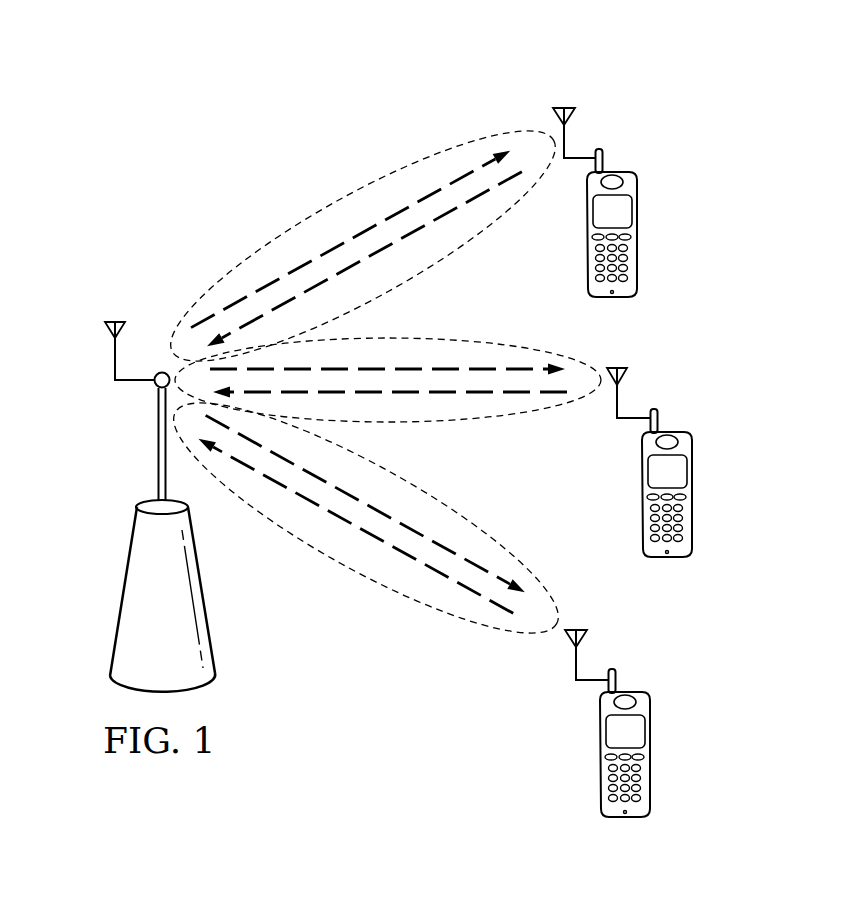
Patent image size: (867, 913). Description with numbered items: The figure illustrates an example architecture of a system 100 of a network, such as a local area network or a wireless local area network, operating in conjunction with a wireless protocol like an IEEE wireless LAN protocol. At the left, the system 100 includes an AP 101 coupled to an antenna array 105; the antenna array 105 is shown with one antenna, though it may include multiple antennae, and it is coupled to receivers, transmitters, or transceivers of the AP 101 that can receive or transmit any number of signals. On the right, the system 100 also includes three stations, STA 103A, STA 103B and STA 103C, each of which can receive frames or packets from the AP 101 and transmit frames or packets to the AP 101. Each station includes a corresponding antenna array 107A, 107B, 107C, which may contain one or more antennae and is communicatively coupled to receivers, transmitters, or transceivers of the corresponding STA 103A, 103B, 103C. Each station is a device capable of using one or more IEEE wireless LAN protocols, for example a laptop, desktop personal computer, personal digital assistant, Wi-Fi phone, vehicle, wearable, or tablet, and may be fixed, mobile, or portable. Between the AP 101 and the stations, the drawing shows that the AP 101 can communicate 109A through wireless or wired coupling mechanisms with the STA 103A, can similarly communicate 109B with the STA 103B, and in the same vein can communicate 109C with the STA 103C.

The system 100 is at (96, 69).
The AP 101 is at (120, 587).
The antenna array 105 is at (111, 319).
The antenna array 107A is at (572, 105).
The antenna array 107B is at (622, 365).
The antenna array 107C is at (580, 627).
The STA 103A is at (638, 237).
The STA 103B is at (692, 497).
The STA 103C is at (650, 757).
The communication 109A is at (343, 208).
The communication 109B is at (424, 338).
The communication 109C is at (353, 557).